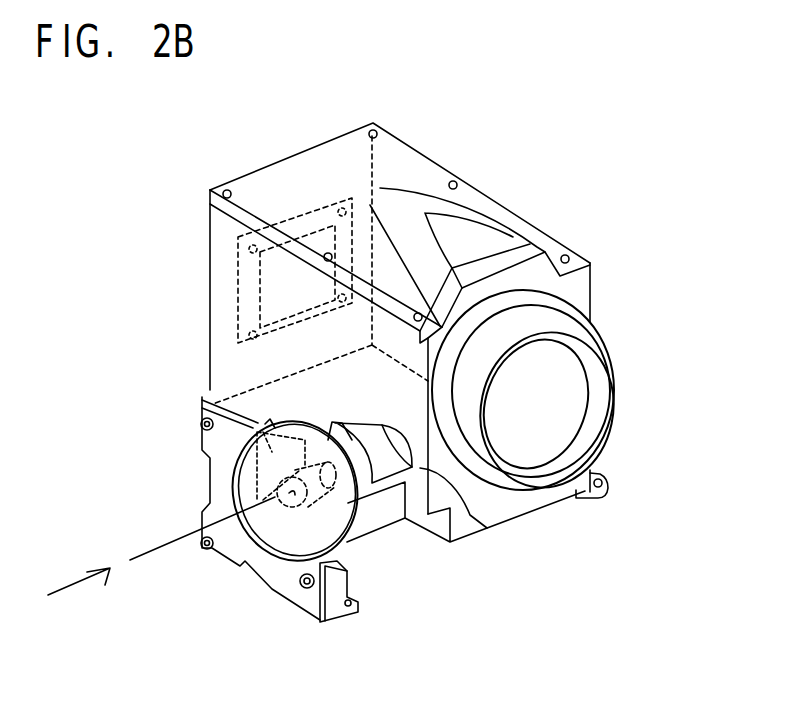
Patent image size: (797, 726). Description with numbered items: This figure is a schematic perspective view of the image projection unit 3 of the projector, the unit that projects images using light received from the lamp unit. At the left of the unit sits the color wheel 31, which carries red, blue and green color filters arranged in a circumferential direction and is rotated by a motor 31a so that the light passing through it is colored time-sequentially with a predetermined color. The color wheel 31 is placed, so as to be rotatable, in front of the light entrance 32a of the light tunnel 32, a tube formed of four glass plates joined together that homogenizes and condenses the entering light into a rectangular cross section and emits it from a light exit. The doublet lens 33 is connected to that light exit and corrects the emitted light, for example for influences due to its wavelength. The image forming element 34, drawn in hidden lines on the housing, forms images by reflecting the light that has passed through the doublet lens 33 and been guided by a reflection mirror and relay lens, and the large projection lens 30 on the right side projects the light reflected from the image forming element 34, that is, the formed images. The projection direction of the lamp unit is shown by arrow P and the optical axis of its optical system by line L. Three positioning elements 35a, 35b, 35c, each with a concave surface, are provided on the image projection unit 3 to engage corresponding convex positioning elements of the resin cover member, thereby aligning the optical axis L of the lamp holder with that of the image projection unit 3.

The image projection unit 3 is at (368, 76).
The projection lens 30 is at (545, 397).
The color wheel 31 is at (342, 530).
The motor 31a is at (367, 523).
The light tunnel 32 is at (275, 480).
The light entrance 32a is at (278, 501).
The doublet lens 33 is at (472, 517).
The image forming element 34 is at (248, 266).
The positioning element 35a is at (201, 425).
The positioning element 35b is at (197, 546).
The positioning element 35c is at (303, 590).
The optical axis L is at (145, 552).
The projection direction P is at (79, 571).